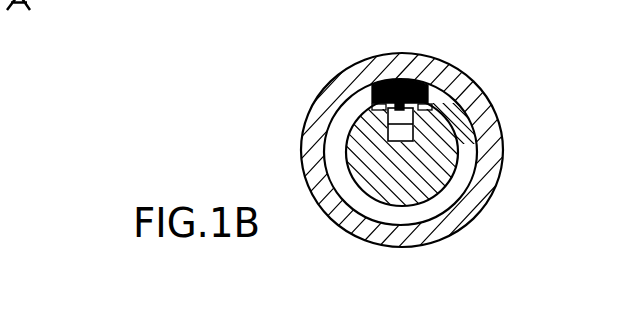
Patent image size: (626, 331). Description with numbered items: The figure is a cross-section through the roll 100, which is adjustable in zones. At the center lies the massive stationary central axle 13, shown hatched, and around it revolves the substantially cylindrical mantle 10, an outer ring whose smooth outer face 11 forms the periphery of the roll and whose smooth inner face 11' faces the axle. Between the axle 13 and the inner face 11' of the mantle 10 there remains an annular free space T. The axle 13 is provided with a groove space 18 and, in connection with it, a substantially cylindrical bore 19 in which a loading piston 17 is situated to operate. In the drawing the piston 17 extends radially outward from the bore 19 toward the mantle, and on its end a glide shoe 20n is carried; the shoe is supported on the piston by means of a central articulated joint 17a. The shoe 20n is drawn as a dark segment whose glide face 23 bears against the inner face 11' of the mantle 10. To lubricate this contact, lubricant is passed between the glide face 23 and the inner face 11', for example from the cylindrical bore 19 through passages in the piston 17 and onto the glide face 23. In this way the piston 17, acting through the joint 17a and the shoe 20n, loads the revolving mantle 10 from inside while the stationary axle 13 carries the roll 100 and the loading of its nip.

The cylindrical mantle 10 is at (483, 197).
The outer face 11 is at (441, 152).
The inner face 11' is at (328, 228).
The central axle 13 is at (457, 151).
The loading piston 17 is at (414, 133).
The central articulated joint 17a is at (414, 125).
The groove space 18 is at (372, 106).
The cylindrical bore 19 is at (388, 126).
The glide shoe 20n is at (428, 92).
The glide face 23 is at (423, 80).
The roll adjustable in zones 100 is at (362, 152).
The free space T is at (442, 203).